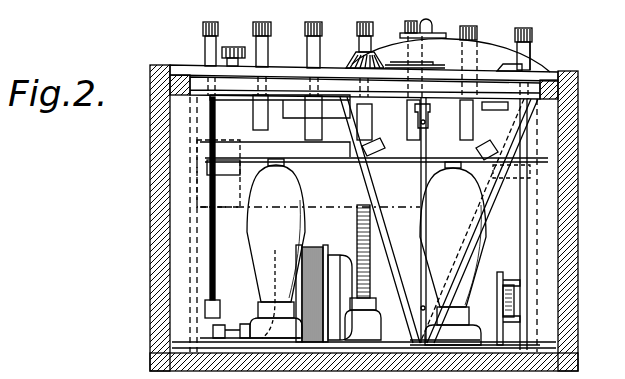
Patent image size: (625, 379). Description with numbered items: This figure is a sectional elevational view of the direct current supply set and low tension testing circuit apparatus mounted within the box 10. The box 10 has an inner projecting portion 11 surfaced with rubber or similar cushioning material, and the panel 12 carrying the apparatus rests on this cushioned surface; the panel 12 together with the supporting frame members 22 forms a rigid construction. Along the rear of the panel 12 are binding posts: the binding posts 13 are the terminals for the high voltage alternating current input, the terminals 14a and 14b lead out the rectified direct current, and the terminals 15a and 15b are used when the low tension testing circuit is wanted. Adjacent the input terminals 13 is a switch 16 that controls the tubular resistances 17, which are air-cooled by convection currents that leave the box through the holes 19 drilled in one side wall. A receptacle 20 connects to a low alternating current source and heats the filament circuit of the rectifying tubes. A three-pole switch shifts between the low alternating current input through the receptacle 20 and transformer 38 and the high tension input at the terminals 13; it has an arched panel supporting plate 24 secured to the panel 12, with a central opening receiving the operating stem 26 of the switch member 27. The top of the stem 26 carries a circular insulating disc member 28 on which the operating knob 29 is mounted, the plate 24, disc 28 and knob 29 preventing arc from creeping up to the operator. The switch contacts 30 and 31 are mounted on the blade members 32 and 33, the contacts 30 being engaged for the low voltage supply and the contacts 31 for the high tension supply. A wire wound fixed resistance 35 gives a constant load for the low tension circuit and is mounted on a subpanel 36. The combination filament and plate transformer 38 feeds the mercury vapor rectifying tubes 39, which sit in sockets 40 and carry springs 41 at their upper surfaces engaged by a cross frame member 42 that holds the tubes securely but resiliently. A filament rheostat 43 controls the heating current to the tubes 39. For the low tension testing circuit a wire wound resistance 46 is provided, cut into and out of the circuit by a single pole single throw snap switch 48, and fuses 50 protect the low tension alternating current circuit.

The box 10 is at (150, 110).
The inner projecting portion 11 is at (150, 95).
The panel 12 is at (188, 65).
The binding posts 13 is at (306, 46).
The terminal 14a is at (368, 23).
The terminal 14b is at (408, 24).
The terminal 15a is at (518, 32).
The terminal 15b is at (530, 30).
The switch 16 is at (241, 36).
The tubular resistances 17 is at (216, 264).
The holes 19 is at (160, 140).
The receptacle 20 is at (332, 375).
The supporting frame members 22 is at (522, 215).
The arched panel supporting plate 24 is at (512, 54).
The operating stem 26 is at (419, 55).
The switch member 27 is at (366, 180).
The circular insulating disc member 28 is at (472, 27).
The operating knob 29 is at (446, 34).
The switch contacts 30 is at (395, 136).
The switch contacts 31 is at (520, 115).
The blade member 32 is at (300, 190).
The blade member 33 is at (514, 108).
The wire wound fixed resistance 35 is at (515, 298).
The subpanel 36 is at (500, 272).
The transformer 38 is at (338, 256).
The mercury vapor rectifying tubes 39 is at (430, 195).
The sockets 40 is at (462, 328).
The springs 41 is at (455, 162).
The cross frame member 42 is at (300, 161).
The filament rheostat 43 is at (360, 54).
The wire wound resistance 46 is at (371, 232).
The single pole single throw snap switch 48 is at (518, 64).
The fuses 50 is at (222, 308).